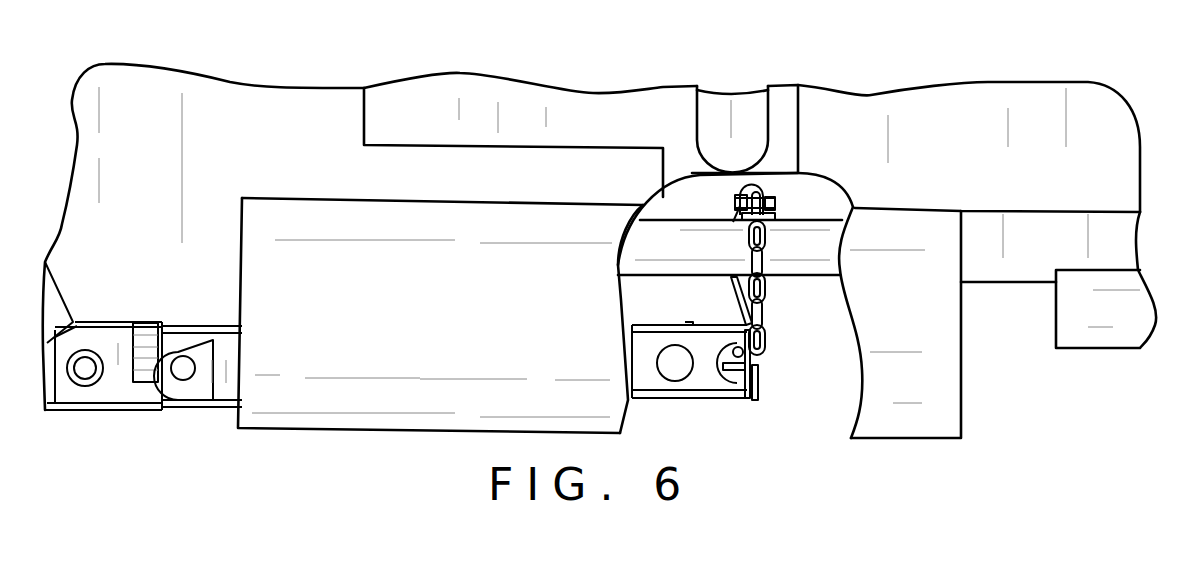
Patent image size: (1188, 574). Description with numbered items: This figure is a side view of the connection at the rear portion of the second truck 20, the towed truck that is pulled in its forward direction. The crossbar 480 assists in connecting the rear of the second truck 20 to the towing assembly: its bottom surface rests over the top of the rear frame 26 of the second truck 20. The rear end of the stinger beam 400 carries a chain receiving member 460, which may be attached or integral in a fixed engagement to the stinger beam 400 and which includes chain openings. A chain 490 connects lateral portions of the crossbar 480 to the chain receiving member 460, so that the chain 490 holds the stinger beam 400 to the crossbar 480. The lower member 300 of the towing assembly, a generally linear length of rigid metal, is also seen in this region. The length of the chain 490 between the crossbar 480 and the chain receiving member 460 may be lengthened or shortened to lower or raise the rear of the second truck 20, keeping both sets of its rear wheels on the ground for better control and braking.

The second truck 20 is at (916, 133).
The rear frame 26 is at (815, 270).
The lower member 300 is at (107, 392).
The stinger beam 400 is at (650, 347).
The chain receiving member 460 is at (749, 396).
The crossbar 480 is at (778, 213).
The chain 490 is at (770, 318).